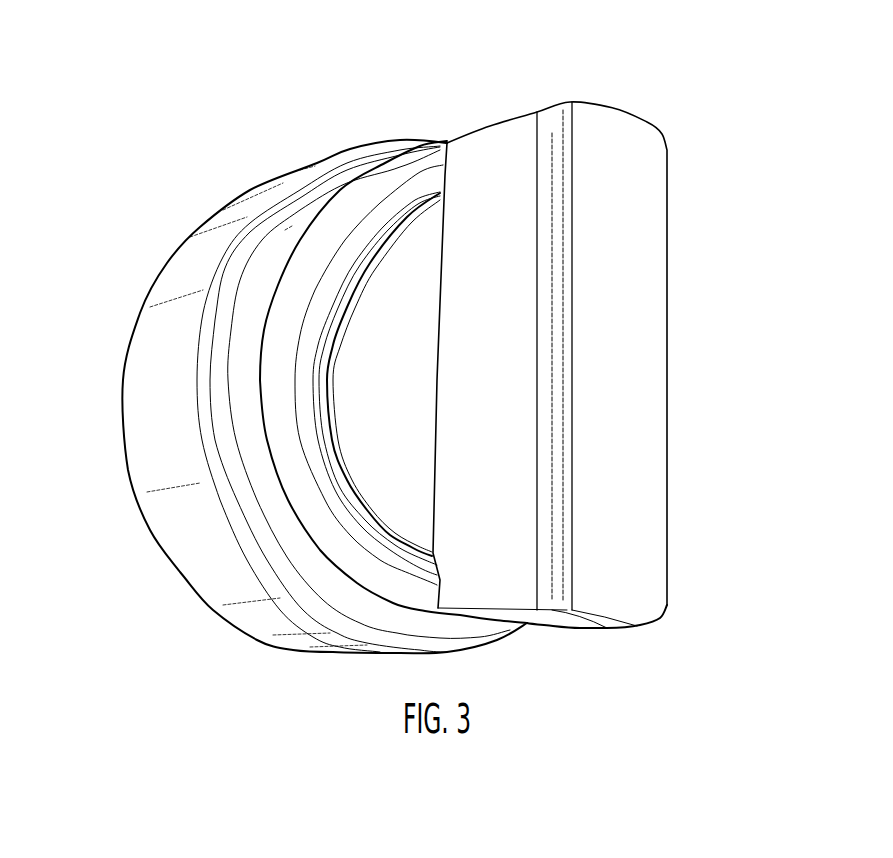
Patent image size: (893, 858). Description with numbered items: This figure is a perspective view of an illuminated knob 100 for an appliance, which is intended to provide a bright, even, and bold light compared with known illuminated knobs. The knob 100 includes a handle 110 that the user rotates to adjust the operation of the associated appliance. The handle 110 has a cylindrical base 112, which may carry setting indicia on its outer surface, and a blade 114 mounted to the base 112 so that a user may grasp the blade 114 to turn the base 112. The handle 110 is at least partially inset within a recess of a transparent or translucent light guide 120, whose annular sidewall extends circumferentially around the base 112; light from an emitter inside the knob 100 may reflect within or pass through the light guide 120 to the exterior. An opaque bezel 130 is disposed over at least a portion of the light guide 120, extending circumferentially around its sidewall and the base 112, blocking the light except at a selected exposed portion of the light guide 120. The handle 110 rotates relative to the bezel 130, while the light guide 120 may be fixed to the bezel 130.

The knob 100 is at (140, 110).
The handle 110 is at (448, 153).
The base 112 is at (400, 495).
The blade 114 is at (635, 363).
The light guide 120 is at (227, 452).
The bezel 130 is at (190, 272).